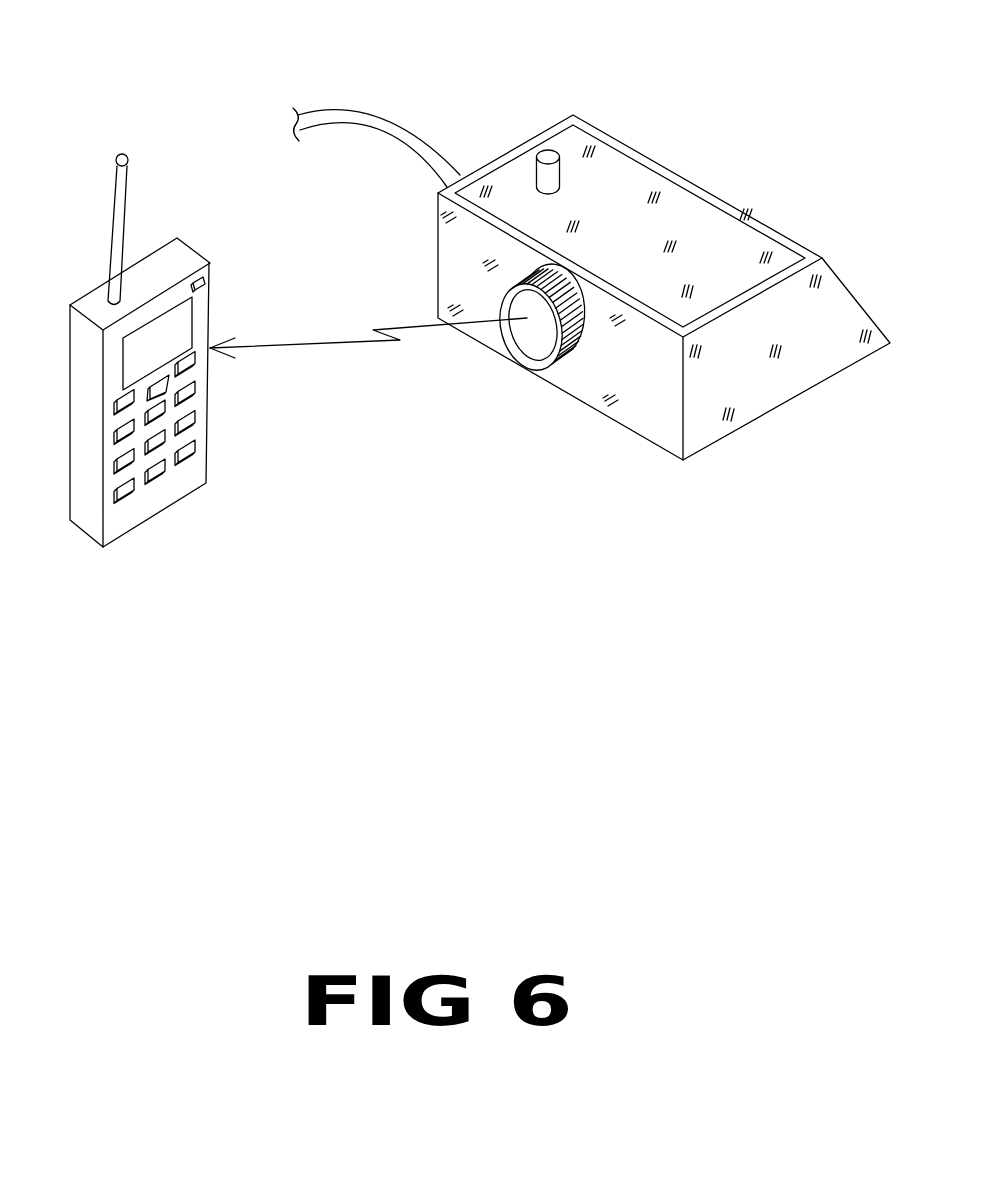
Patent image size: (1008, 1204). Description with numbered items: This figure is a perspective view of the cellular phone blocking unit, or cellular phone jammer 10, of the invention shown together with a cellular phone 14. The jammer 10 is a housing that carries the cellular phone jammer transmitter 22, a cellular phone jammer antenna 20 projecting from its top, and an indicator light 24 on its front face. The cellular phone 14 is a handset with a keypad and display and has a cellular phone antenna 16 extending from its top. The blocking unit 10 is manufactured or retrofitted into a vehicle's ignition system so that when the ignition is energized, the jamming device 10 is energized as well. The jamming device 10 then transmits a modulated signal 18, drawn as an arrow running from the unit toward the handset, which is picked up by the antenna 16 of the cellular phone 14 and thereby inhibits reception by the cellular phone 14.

The cellular phone jammer 10 is at (664, 245).
The cellular phone 14 is at (122, 523).
The cellular phone antenna 16 is at (118, 225).
The modulated signal 18 is at (325, 342).
The cellular phone jammer antenna 20 is at (547, 152).
The cellular phone jammer transmitter 22 is at (632, 190).
The indicator light 24 is at (413, 138).